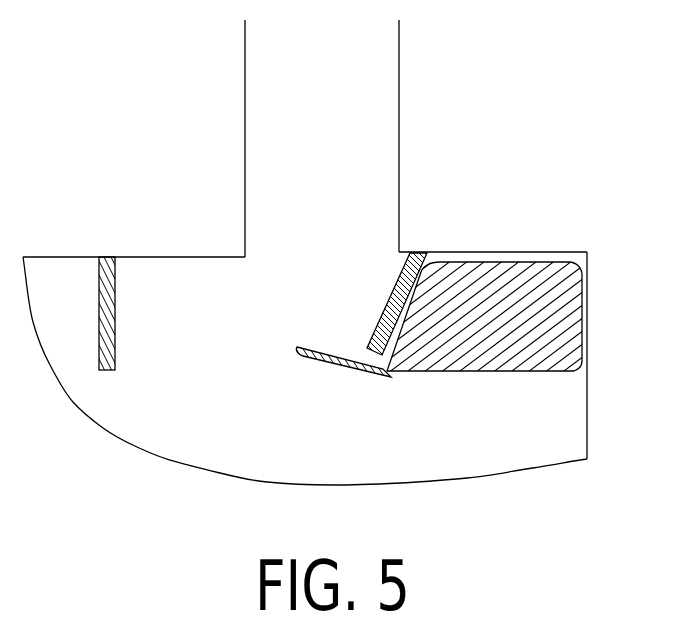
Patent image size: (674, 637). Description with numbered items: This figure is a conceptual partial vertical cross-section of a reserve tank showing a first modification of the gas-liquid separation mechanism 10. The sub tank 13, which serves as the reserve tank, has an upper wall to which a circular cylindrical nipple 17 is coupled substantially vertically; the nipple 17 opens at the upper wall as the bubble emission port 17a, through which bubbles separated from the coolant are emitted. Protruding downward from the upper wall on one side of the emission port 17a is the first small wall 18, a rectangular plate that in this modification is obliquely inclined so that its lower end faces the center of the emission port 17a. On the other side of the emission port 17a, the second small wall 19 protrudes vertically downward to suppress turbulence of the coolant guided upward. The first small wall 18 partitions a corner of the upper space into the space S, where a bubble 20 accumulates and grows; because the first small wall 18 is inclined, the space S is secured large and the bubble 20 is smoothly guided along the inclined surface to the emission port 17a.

The gas-liquid separation mechanism 10 is at (540, 146).
The sub tank 13 is at (515, 252).
The nipple 17 is at (399, 118).
The bubble emission port 17a is at (302, 252).
The first small wall 18 is at (393, 293).
The second small wall 19 is at (117, 343).
The bubble 20 is at (519, 370).
The space S is at (588, 254).